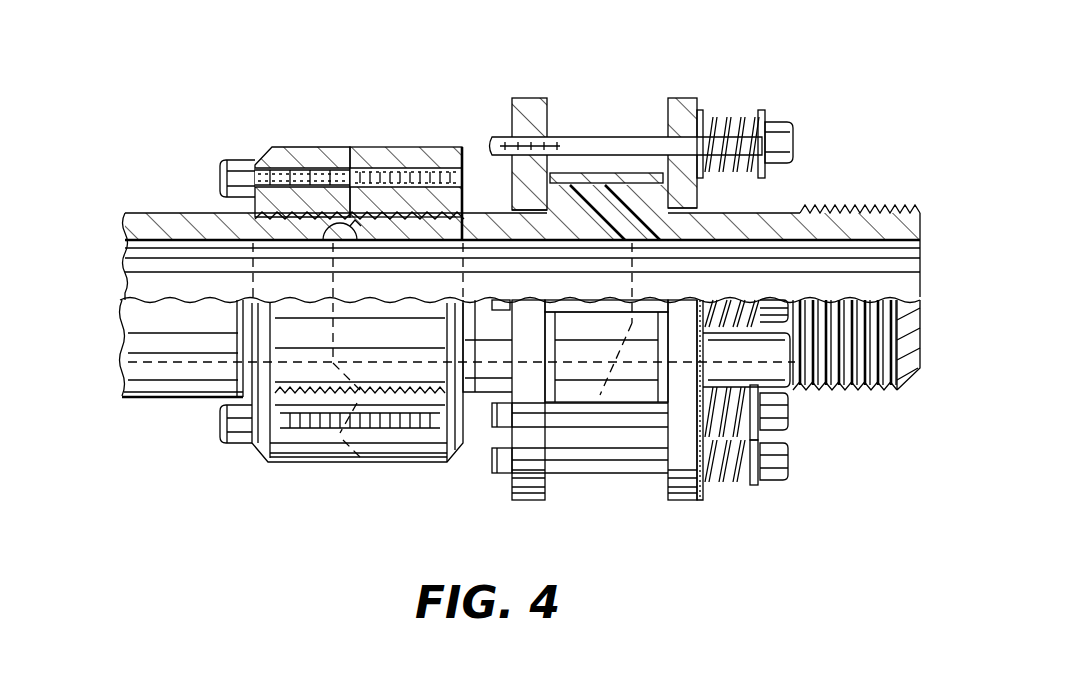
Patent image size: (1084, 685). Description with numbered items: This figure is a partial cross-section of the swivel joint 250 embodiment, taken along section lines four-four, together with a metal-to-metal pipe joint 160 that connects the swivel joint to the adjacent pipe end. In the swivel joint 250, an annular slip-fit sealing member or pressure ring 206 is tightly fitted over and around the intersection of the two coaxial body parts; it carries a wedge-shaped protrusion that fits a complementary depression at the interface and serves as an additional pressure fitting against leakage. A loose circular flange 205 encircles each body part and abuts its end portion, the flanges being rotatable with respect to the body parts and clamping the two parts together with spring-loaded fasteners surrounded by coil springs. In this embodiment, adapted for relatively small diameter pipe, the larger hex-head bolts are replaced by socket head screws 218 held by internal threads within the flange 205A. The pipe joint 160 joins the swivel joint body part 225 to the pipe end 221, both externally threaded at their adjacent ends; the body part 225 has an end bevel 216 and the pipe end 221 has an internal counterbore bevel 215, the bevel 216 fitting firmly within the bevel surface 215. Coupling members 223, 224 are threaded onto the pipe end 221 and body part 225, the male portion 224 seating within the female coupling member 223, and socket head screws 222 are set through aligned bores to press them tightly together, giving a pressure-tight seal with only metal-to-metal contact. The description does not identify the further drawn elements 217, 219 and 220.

The metal-to-metal pipe joint 160 is at (298, 471).
The loose circular flange 205 is at (684, 98).
The flange 205A is at (520, 98).
The pressure ring 206 is at (612, 175).
The counterbore bevel 215 is at (323, 243).
The end bevel 216 is at (356, 228).
The flange plate 217 is at (492, 468).
The socket head screws 218 is at (735, 488).
The bolt 219 is at (757, 492).
The threaded end 220 is at (904, 392).
The pipe end 221 is at (199, 212).
The socket head screws 222 is at (238, 158).
The female coupling member 223 is at (313, 147).
The male coupling member 224 is at (421, 147).
The swivel joint body part 225 is at (497, 243).
The swivel joint 250 is at (607, 485).